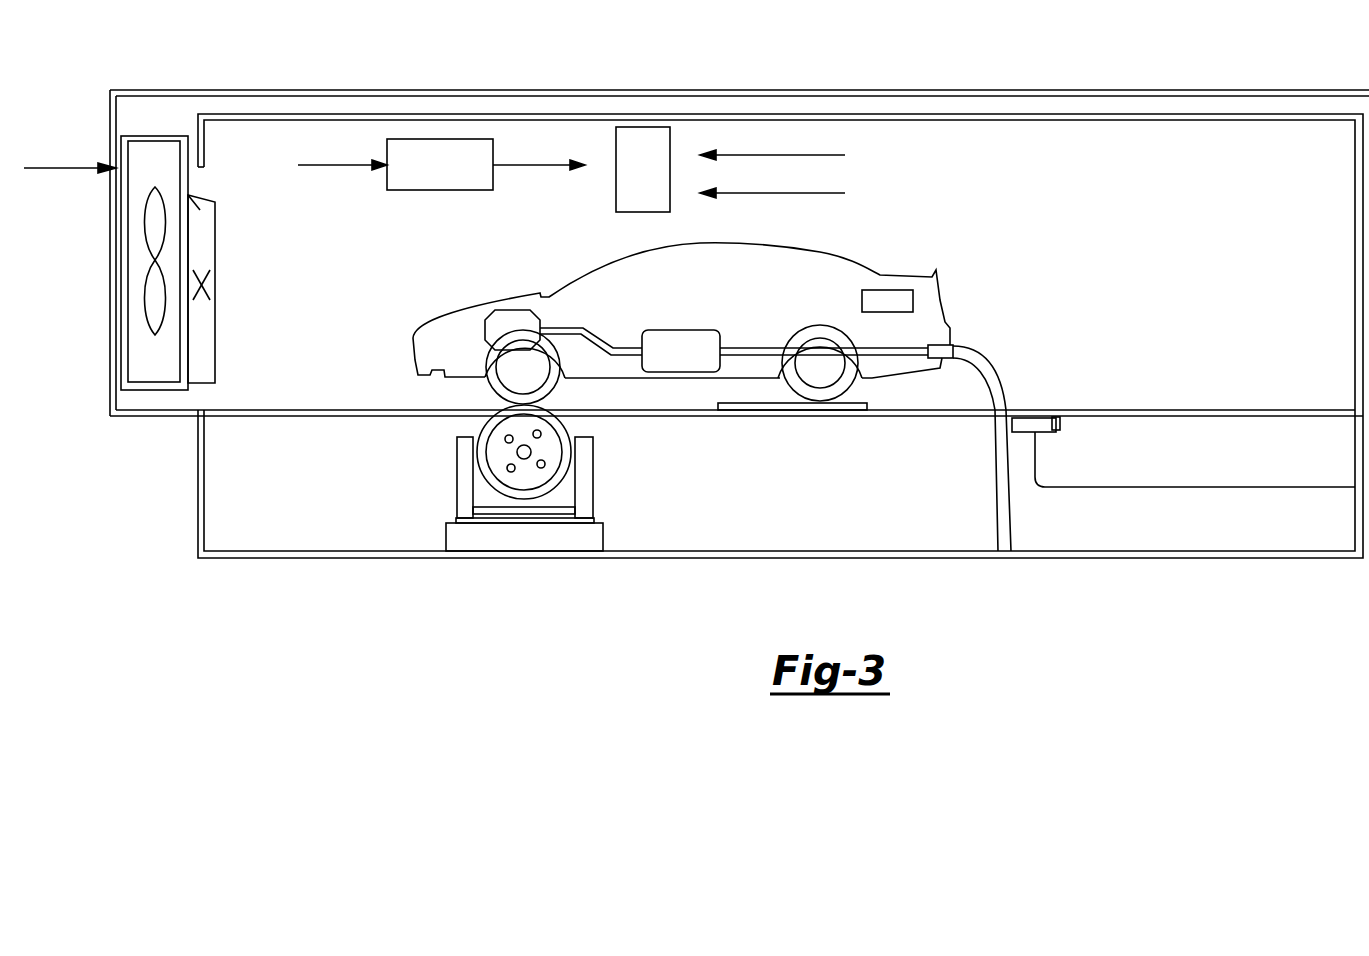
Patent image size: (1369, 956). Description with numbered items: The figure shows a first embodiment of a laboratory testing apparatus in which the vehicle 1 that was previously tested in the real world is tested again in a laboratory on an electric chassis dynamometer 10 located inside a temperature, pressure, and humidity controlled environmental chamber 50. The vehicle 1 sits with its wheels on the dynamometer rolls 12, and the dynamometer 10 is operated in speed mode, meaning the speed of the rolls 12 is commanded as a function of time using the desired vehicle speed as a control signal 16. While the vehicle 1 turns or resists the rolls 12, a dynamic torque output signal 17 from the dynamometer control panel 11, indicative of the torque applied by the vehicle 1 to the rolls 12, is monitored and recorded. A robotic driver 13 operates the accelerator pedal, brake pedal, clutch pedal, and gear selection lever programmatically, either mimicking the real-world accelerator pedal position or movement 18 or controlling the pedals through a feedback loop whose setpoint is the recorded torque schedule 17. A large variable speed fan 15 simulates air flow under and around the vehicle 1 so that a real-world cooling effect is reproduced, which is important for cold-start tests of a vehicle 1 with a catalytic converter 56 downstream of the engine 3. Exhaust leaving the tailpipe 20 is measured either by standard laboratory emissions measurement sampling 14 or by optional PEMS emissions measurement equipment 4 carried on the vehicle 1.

The vehicle 1 is at (590, 272).
The engine 3 is at (497, 320).
The PEMS emissions measurement equipment 4 is at (913, 302).
The electric chassis dynamometer 10 is at (575, 508).
The dynamometer control panel 11 is at (440, 139).
The dynamometer rolls 12 is at (482, 422).
The robotic driver 13 is at (640, 127).
The standard laboratory emissions measurement sampling 14 is at (1223, 487).
The variable speed fan 15 is at (128, 352).
The control signal 16 is at (68, 172).
The dynamic torque output signal 17 is at (558, 165).
The accelerator pedal position or movement 18 is at (830, 155).
The tailpipe 20 is at (835, 193).
The environmental chamber 50 is at (1138, 114).
The catalytic converter 56 is at (688, 330).